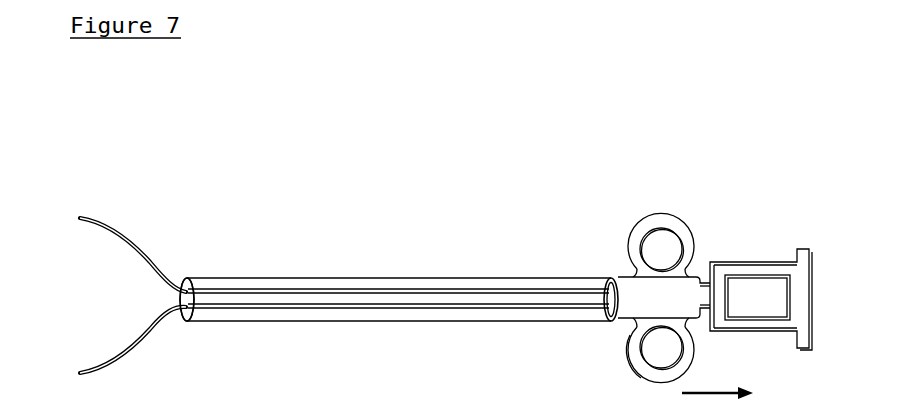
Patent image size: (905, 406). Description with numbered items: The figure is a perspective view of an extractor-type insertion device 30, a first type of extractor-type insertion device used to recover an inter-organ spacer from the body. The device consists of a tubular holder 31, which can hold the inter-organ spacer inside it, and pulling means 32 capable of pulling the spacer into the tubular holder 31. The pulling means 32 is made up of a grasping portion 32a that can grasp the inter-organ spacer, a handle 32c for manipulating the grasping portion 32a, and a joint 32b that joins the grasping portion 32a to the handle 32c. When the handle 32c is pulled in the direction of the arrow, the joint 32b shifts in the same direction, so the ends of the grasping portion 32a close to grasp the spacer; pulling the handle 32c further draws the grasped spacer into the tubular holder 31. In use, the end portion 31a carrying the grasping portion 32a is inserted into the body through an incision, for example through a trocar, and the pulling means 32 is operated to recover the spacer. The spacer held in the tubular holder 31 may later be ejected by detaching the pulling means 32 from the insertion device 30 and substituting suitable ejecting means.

The extractor-type insertion device 30 is at (656, 150).
The tubular holder 31 is at (390, 325).
The end portion 31a is at (176, 327).
The pulling means 32 is at (628, 190).
The grasping portion 32a is at (155, 255).
The joint 32b is at (443, 290).
The handle 32c is at (738, 262).